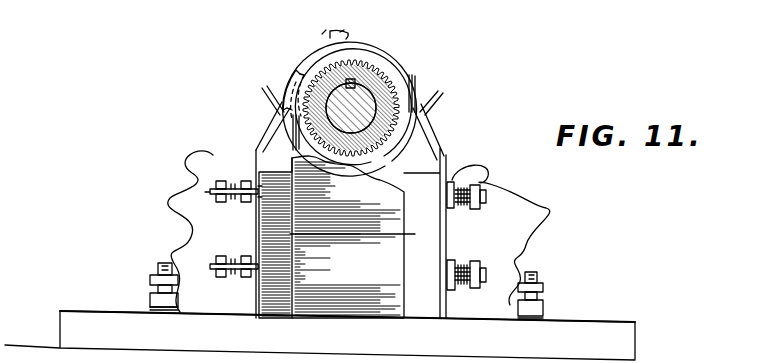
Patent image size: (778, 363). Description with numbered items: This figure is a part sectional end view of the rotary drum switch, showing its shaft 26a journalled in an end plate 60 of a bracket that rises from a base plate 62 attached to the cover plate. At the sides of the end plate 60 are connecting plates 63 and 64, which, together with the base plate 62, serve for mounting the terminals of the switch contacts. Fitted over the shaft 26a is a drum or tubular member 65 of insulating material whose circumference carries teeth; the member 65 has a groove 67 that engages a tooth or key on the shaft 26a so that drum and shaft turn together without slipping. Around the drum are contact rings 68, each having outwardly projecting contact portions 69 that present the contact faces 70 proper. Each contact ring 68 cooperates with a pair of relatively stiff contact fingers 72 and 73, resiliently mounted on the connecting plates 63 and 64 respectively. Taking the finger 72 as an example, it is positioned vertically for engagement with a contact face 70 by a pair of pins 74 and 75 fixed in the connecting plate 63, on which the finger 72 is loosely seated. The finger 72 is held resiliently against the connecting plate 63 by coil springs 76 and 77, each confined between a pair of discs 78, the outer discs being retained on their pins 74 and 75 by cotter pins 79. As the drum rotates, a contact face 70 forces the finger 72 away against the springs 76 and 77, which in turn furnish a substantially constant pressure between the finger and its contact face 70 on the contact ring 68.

The shaft 26a is at (333, 98).
The end plate 60 is at (335, 234).
The base plate 62 is at (595, 320).
The connecting plate 63 is at (263, 118).
The connecting plate 64 is at (427, 176).
The drum or tubular member 65 is at (387, 82).
The groove 67 is at (333, 62).
The contact ring 68 is at (371, 56).
The contact portion 69 is at (337, 42).
The contact face 70 is at (294, 60).
The contact finger 72 is at (270, 110).
The contact finger 73 is at (433, 106).
The pin 74 is at (208, 174).
The pin 75 is at (210, 277).
The coil spring 76 is at (234, 181).
The coil spring 77 is at (233, 275).
The disc 78 is at (243, 206).
The cotter pin 79 is at (205, 198).